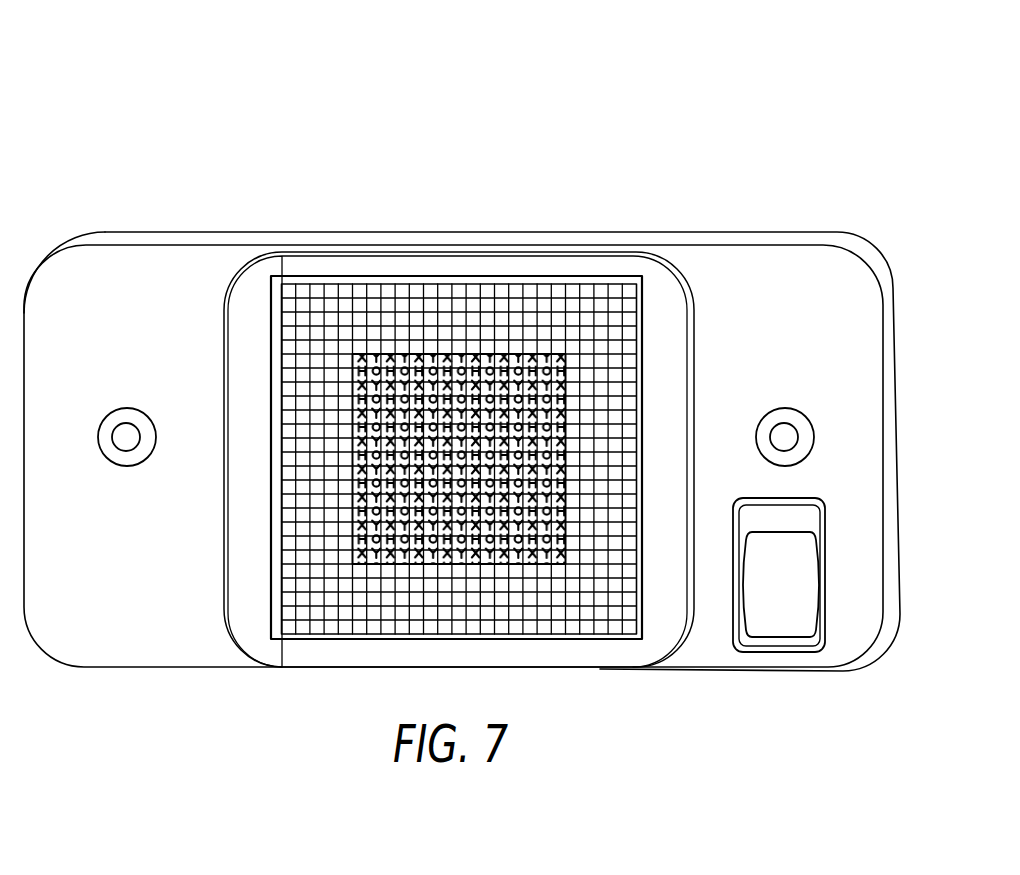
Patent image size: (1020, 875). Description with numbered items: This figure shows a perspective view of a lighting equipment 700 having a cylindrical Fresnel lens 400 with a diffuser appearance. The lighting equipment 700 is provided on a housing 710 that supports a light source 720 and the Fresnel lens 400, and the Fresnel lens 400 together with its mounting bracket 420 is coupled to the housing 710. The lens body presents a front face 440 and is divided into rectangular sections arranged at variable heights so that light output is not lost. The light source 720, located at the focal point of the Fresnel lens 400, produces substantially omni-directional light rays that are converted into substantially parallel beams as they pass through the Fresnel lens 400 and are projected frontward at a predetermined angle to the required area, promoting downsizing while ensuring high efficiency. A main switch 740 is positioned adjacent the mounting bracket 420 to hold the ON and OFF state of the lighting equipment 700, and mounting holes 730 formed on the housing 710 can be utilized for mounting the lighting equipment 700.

The lighting equipment 700 is at (736, 80).
The housing 710 is at (843, 302).
The mounting bracket 420 is at (385, 265).
The Fresnel lens 400 is at (515, 258).
The front face 440 is at (302, 327).
The light source 720 is at (546, 358).
The mounting hole 730 is at (124, 436).
The main switch 740 is at (778, 592).